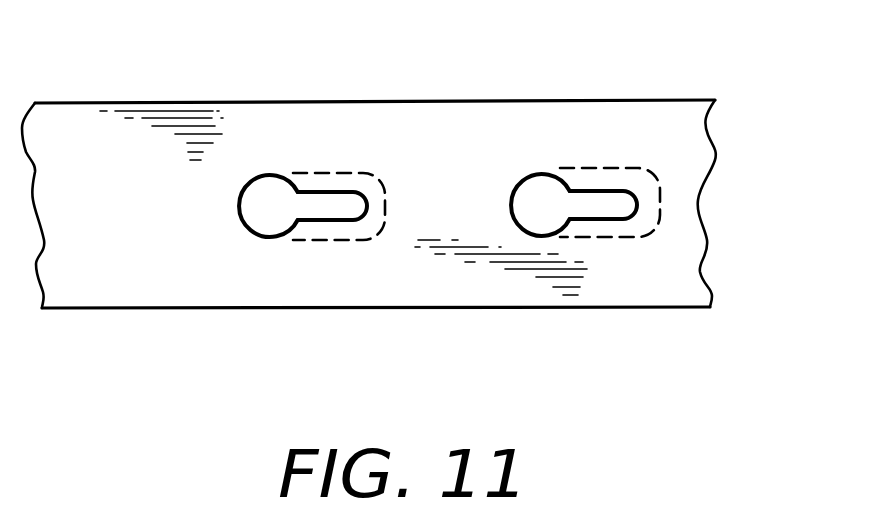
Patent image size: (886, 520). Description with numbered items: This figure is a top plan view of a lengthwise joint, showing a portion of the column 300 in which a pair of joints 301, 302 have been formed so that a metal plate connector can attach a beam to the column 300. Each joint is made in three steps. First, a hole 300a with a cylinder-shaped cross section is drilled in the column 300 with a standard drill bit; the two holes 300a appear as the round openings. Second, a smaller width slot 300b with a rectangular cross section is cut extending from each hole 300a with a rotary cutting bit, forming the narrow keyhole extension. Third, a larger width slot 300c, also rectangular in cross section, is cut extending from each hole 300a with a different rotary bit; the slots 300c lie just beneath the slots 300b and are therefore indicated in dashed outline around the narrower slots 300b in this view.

The column 300 is at (427, 122).
The hole 300a is at (263, 218).
The smaller width slot 300b is at (323, 210).
The larger width slot 300c is at (372, 208).
The joint 301 is at (322, 172).
The joint 302 is at (603, 169).